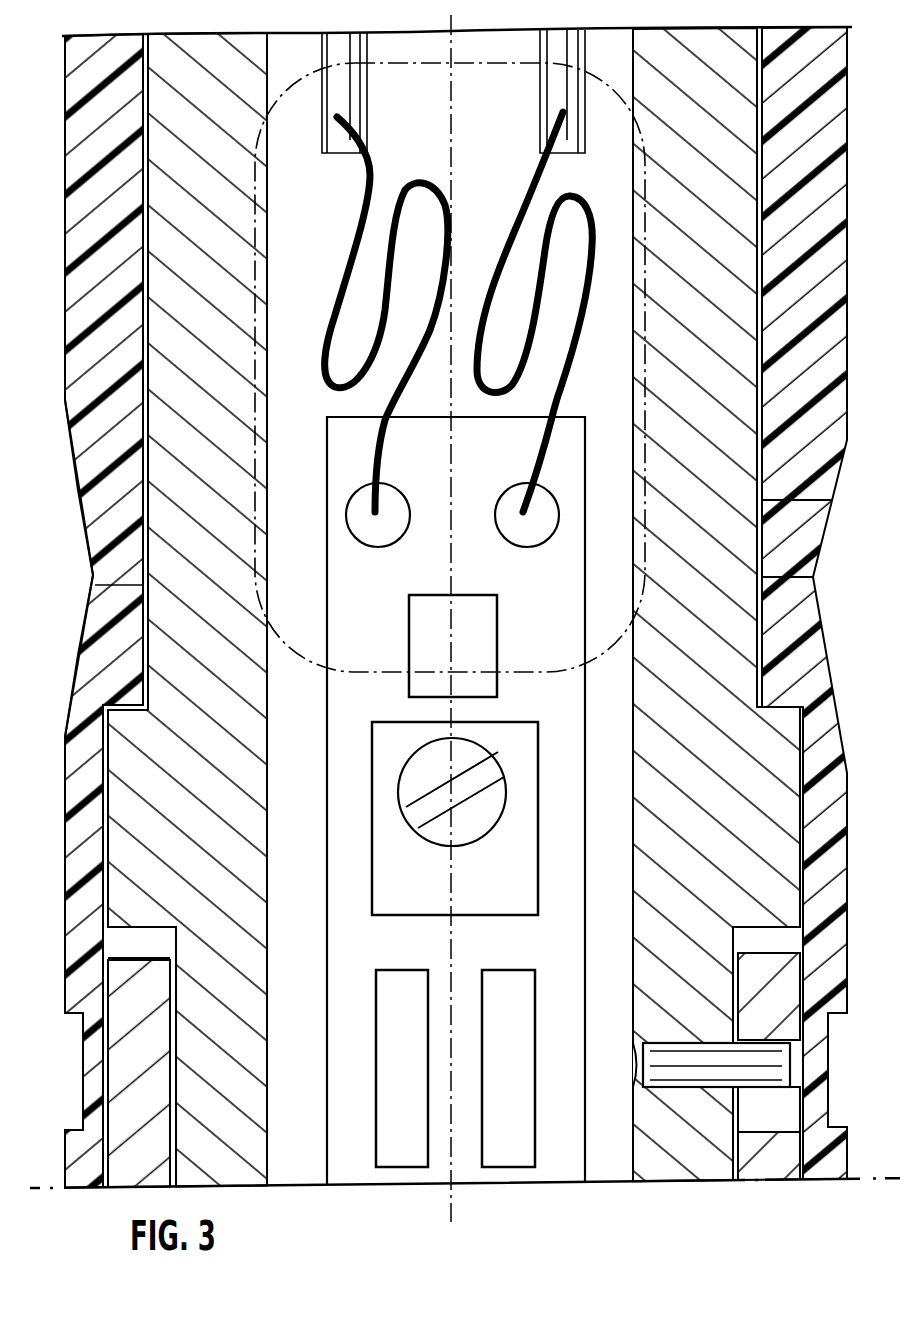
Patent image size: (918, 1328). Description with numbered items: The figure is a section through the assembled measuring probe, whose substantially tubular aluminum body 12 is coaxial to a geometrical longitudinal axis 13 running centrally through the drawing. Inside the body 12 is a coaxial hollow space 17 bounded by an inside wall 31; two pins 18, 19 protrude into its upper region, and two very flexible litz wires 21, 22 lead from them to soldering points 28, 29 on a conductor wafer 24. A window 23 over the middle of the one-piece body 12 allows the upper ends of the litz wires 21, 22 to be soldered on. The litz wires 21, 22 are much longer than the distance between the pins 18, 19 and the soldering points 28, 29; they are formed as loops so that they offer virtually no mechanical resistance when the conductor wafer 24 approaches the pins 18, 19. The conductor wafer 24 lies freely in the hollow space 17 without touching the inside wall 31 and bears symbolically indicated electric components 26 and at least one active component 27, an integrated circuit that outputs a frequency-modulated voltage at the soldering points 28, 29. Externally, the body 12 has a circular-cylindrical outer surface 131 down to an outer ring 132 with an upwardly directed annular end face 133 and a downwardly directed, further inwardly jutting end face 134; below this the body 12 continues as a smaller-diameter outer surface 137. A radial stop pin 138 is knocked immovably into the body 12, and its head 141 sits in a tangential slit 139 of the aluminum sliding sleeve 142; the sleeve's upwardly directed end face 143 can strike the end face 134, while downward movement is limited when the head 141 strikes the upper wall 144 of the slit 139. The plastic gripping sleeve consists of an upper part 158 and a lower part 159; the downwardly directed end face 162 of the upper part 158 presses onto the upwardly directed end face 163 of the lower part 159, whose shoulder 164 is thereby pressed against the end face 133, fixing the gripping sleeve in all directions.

The body 12 is at (163, 289).
The geometrical longitudinal axis 13 is at (453, 943).
The coaxial hollow space 17 is at (309, 839).
The pin 18 is at (368, 105).
The pin 19 is at (540, 98).
The litz wire 21 is at (347, 247).
The litz wire 22 is at (530, 187).
The window 23 is at (632, 80).
The conductor wafer 24 is at (377, 625).
The electric component 26 is at (482, 627).
The active component 27 is at (517, 882).
The soldering point 28 is at (393, 498).
The soldering point 29 is at (508, 500).
The inside wall 31 is at (634, 717).
The outer surface 131 is at (790, 502).
The outer ring 132 is at (800, 762).
The end face 133 is at (760, 703).
The end face 134 is at (763, 934).
The outer surface 137 is at (740, 963).
The stop pin 138 is at (668, 1053).
The tangential slit 139 is at (770, 1112).
The head 141 is at (767, 1060).
The sliding sleeve 142 is at (137, 1041).
The end face 143 is at (130, 952).
The upper wall 144 is at (767, 1043).
The upper part 158 is at (92, 388).
The lower part 159 is at (72, 881).
The end face 162 is at (120, 593).
The end face 163 is at (120, 596).
The shoulder 164 is at (103, 737).